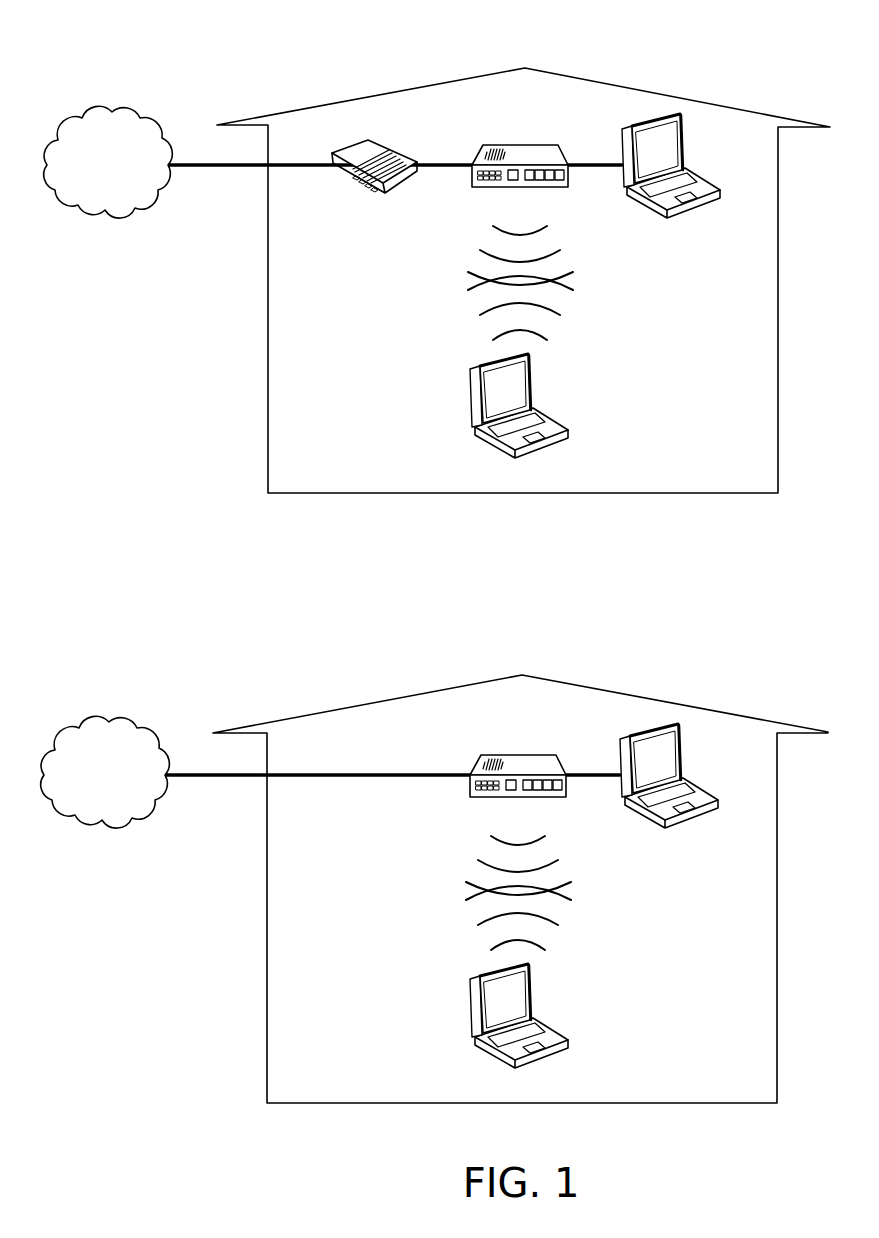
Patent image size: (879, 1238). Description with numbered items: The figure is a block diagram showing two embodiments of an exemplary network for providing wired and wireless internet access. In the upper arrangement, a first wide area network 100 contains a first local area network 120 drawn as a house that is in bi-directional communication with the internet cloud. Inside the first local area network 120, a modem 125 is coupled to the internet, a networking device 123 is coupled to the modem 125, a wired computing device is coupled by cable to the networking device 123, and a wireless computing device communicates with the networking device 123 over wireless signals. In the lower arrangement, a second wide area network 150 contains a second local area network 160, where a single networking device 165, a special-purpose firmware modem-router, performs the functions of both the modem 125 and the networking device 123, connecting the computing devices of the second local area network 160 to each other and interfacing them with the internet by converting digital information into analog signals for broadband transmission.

The first wide area network 100 is at (142, 63).
The first local area network 120 is at (268, 382).
The networking device 123 is at (538, 152).
The modem 125 is at (378, 147).
The second wide area network 150 is at (140, 672).
The second local area network 160 is at (267, 995).
The networking device 165 is at (505, 757).